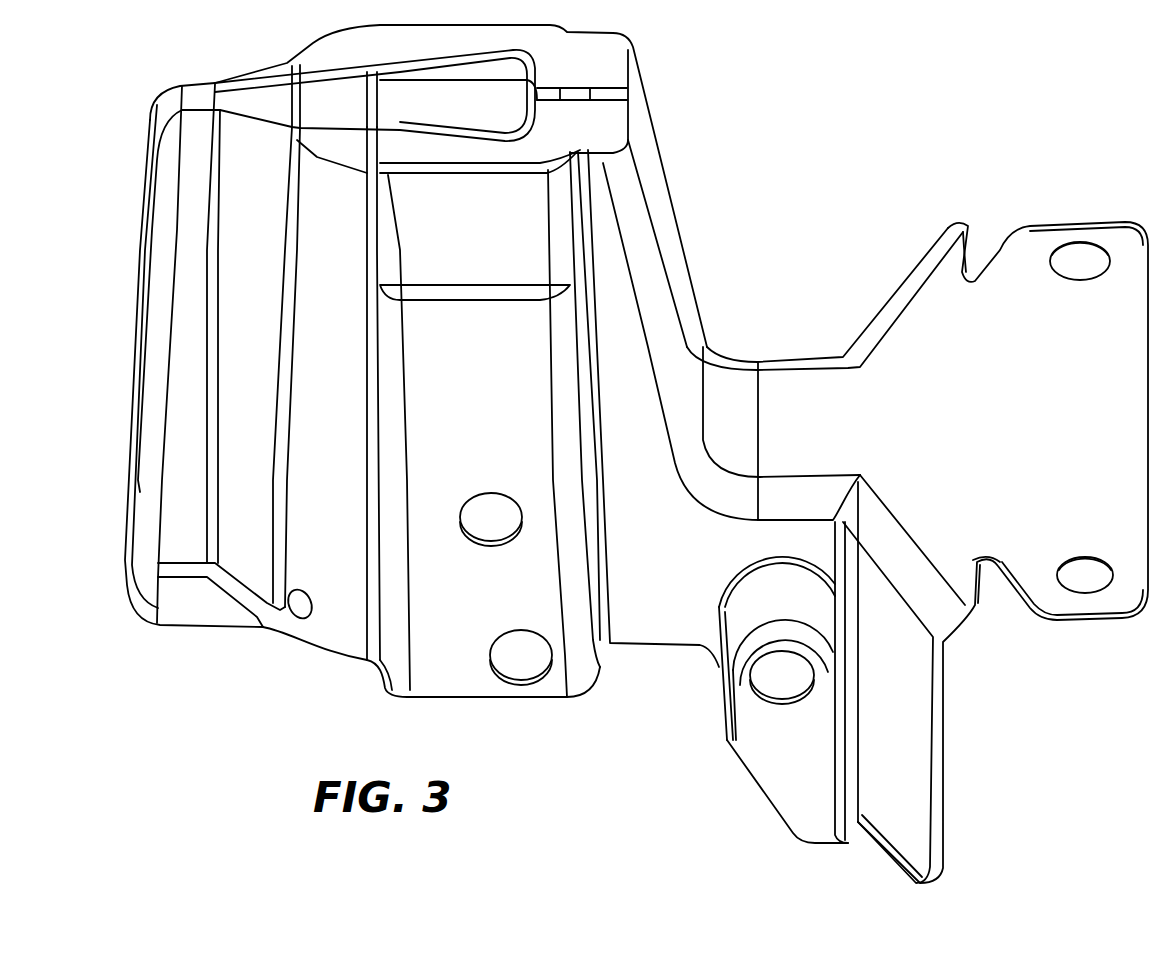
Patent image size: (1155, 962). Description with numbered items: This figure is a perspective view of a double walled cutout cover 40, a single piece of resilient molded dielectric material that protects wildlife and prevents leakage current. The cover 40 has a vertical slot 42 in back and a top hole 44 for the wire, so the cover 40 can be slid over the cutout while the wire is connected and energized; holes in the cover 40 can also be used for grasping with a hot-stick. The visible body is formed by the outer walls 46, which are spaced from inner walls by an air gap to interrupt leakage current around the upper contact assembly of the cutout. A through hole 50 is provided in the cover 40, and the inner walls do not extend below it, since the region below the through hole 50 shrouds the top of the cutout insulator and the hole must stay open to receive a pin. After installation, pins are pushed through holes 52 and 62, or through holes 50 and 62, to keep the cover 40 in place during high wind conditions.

The cover 40 is at (985, 90).
The vertical slot 42 is at (147, 123).
The top hole 44 is at (283, 100).
The outer walls 46 is at (553, 678).
The through hole 50 is at (520, 655).
The hole 52 is at (487, 520).
The hole 62 is at (767, 670).